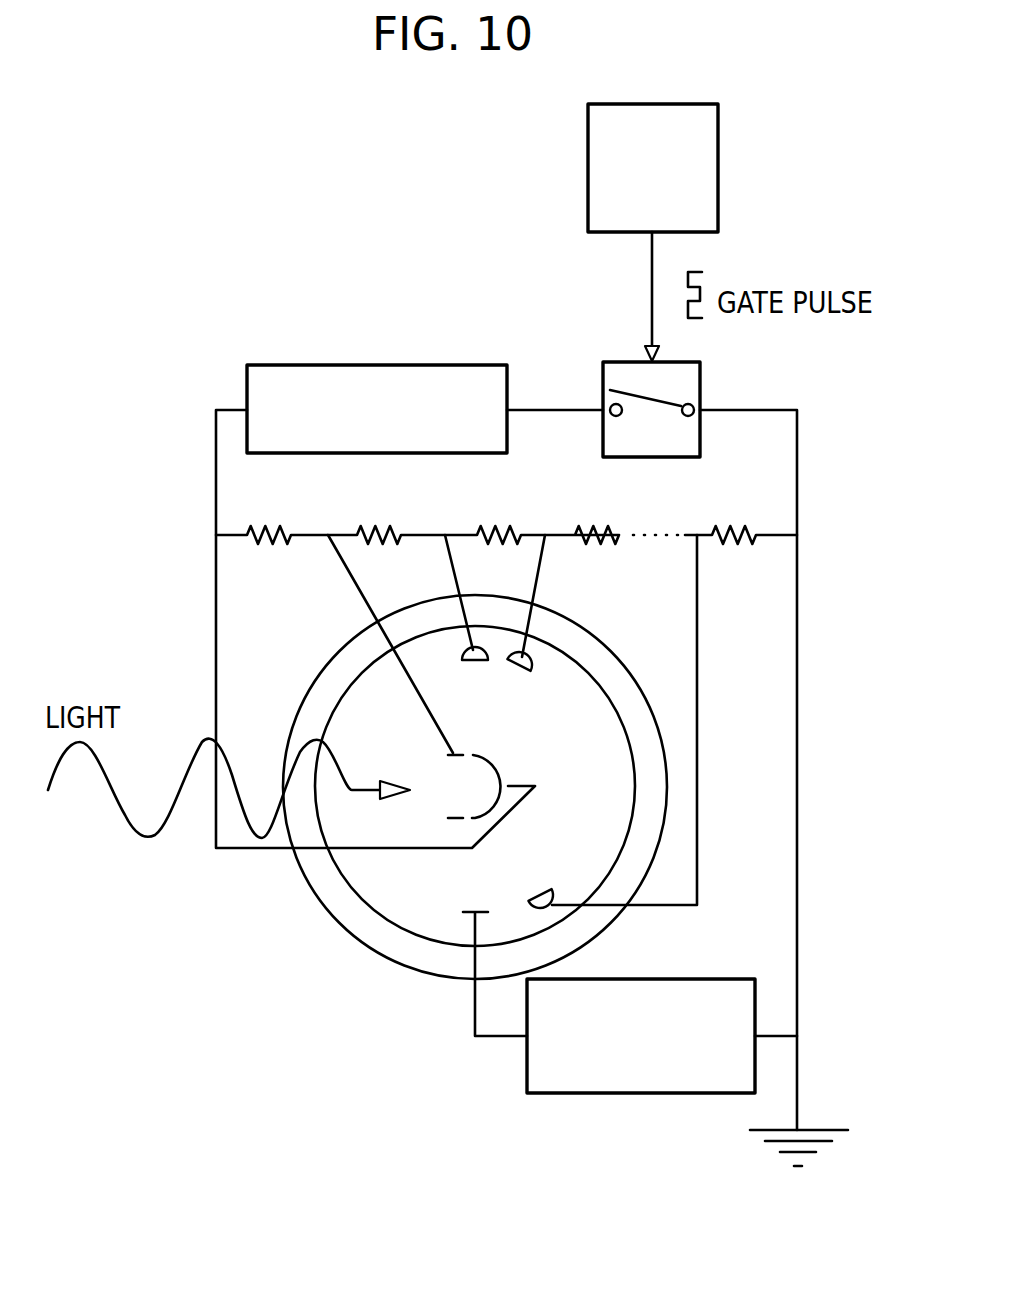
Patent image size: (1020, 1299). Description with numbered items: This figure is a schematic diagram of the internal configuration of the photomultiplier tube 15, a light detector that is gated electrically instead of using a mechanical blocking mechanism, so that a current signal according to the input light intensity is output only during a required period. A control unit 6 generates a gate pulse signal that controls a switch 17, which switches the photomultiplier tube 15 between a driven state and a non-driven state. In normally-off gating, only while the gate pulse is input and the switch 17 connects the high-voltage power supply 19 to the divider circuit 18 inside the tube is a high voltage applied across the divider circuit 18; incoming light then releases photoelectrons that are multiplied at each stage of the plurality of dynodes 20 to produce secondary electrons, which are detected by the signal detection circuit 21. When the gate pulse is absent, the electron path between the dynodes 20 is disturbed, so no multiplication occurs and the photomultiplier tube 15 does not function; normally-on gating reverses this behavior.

The control unit 6 is at (718, 155).
The photomultiplier tube 15 is at (375, 950).
The switch 17 is at (700, 378).
The divider circuit 18 is at (778, 500).
The high-voltage power supply 19 is at (376, 365).
The dynodes 20 is at (466, 653).
The signal detection circuit 21 is at (610, 1093).